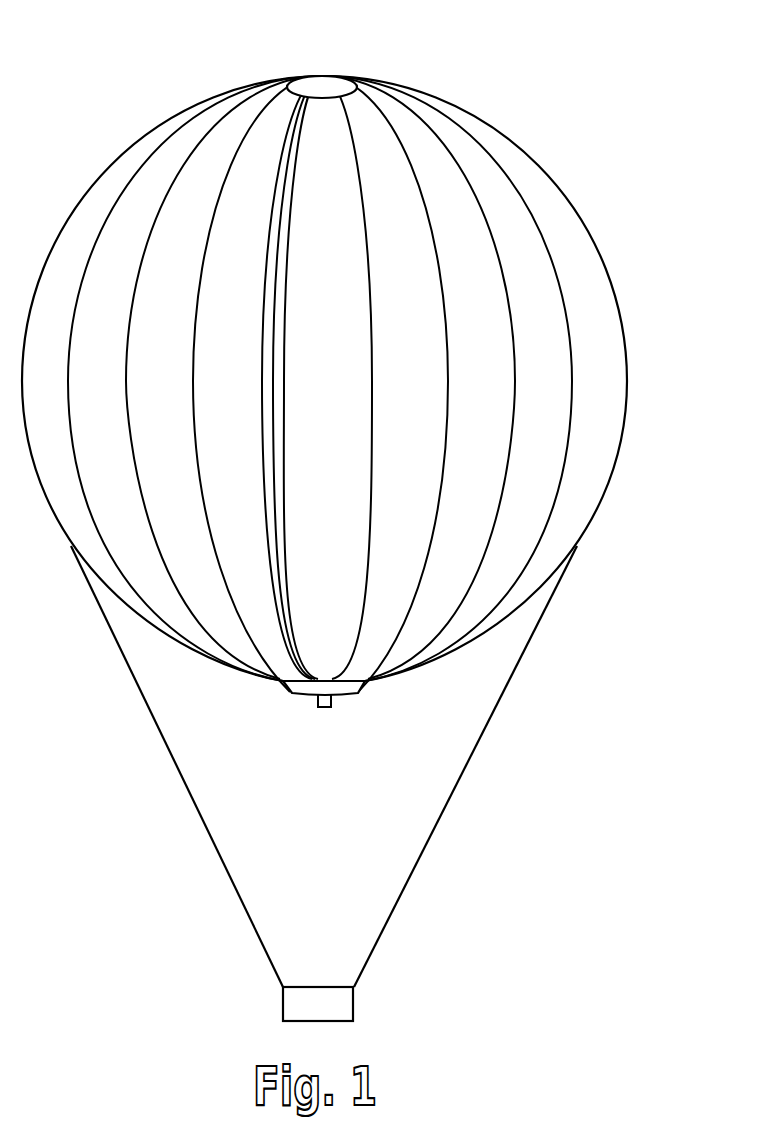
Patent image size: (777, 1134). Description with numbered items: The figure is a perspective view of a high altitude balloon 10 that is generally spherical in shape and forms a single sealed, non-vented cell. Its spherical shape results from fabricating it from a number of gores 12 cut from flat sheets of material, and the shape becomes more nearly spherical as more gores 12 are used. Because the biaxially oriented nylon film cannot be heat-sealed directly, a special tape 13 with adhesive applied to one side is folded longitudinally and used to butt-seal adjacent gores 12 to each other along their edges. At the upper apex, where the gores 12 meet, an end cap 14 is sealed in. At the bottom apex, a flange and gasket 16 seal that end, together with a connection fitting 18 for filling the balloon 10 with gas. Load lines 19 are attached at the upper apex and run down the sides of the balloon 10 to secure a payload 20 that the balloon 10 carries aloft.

The high altitude balloon 10 is at (541, 138).
The gores 12 is at (351, 421).
The tape 13 is at (285, 310).
The end cap 14 is at (319, 82).
The flange and gasket 16 is at (360, 693).
The connection fitting 18 is at (316, 707).
The load lines 19 is at (497, 709).
The payload 20 is at (353, 1008).